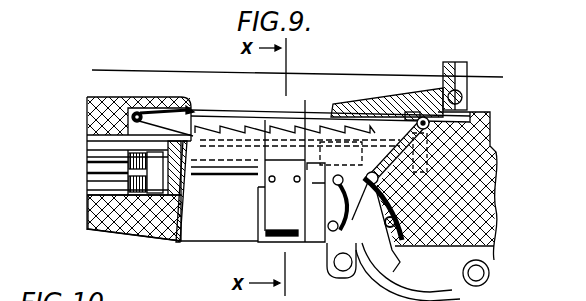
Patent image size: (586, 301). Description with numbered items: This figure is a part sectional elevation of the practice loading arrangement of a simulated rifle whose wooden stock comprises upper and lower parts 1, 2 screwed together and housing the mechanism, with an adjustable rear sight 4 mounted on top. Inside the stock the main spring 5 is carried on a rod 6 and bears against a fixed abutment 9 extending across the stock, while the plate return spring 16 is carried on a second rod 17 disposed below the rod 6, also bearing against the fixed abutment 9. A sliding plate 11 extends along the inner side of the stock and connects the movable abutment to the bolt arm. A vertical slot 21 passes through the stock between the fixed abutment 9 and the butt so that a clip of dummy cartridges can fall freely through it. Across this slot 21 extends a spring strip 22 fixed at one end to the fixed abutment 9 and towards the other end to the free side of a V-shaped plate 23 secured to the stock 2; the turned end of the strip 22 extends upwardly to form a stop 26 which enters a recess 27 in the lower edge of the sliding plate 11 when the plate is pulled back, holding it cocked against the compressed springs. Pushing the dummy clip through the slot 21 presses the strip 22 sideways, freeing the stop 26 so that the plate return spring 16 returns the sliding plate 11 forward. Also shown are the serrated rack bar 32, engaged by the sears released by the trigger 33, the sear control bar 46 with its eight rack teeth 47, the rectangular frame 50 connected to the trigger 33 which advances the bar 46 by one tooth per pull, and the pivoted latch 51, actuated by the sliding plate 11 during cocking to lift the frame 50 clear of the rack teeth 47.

The upper stock part 1 is at (113, 107).
The lower stock part 2 is at (88, 228).
The rear sight 4 is at (445, 80).
The main spring 5 is at (110, 162).
The rod 6 is at (100, 153).
The fixed abutment 9 is at (128, 208).
The sliding plate 11 is at (227, 150).
The plate return spring 16 is at (179, 187).
The rod 17 is at (107, 180).
The vertical slot 21 is at (227, 226).
The spring strip 22 is at (227, 178).
The V-shaped plate 23 is at (280, 218).
The stop 26 is at (306, 242).
The recess 27 is at (328, 163).
The rack bar 32 is at (118, 142).
The trigger 33 is at (383, 283).
The sear control bar 46 is at (331, 112).
The rack teeth 47 is at (252, 128).
The rectangular frame 50 is at (213, 110).
The pivoted latch 51 is at (193, 108).